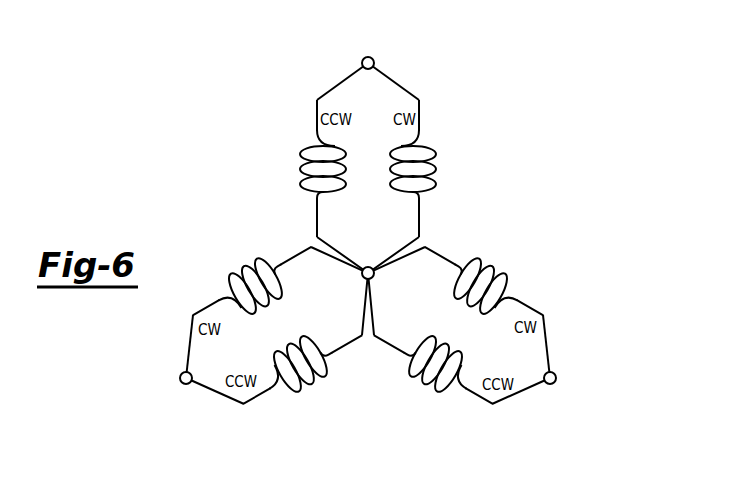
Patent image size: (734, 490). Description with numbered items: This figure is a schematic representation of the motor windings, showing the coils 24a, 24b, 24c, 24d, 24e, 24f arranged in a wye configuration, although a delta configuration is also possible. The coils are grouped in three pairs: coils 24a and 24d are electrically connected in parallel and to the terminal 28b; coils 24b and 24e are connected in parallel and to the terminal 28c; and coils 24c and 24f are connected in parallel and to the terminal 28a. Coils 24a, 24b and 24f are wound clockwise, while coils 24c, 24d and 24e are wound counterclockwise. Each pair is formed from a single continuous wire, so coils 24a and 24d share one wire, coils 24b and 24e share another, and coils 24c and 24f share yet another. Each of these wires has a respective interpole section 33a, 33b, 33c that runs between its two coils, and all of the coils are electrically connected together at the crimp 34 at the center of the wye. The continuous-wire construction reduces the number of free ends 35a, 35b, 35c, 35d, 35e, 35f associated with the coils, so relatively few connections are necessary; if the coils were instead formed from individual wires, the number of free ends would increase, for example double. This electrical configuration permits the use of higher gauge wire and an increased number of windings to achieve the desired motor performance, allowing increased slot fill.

The coil 24a is at (436, 168).
The coil 24b is at (492, 264).
The coil 24c is at (310, 383).
The coil 24d is at (300, 168).
The coil 24e is at (427, 383).
The coil 24f is at (253, 264).
The terminal 28a is at (180, 384).
The terminal 28b is at (366, 57).
The terminal 28c is at (557, 383).
The interpole section 33a is at (327, 260).
The interpole section 33b is at (411, 258).
The interpole section 33c is at (409, 260).
The crimp 34 is at (368, 266).
The free end 35a is at (402, 80).
The free end 35b is at (548, 338).
The free end 35c is at (213, 395).
The free end 35d is at (344, 80).
The free end 35e is at (520, 394).
The free end 35f is at (187, 352).